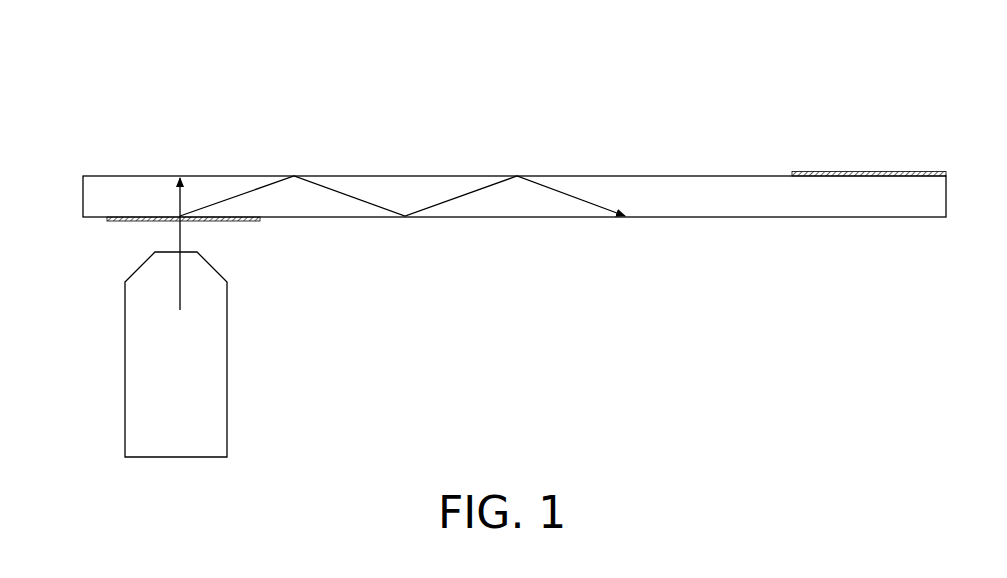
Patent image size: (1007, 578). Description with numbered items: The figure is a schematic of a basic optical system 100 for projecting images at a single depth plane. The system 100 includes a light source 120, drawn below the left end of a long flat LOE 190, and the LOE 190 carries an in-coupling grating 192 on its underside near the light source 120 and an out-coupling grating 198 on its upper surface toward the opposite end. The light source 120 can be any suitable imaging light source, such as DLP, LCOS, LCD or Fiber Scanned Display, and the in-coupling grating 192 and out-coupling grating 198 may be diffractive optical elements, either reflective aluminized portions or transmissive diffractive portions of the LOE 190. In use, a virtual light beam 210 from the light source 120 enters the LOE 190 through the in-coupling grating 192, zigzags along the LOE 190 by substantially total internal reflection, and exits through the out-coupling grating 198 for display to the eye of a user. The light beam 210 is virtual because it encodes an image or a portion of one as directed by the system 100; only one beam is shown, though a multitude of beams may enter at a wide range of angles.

The optical system 100 is at (124, 78).
The light source 120 is at (165, 405).
The LOE 190 is at (705, 193).
The in-coupling grating 192 is at (243, 221).
The out-coupling grating 198 is at (860, 172).
The virtual light beam 210 is at (178, 232).